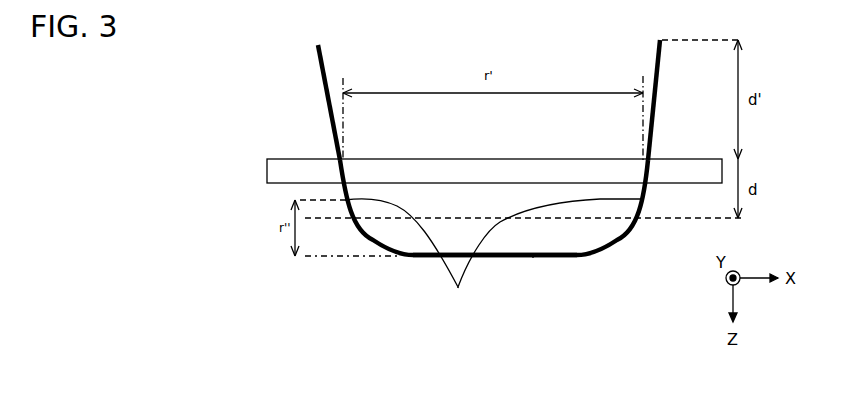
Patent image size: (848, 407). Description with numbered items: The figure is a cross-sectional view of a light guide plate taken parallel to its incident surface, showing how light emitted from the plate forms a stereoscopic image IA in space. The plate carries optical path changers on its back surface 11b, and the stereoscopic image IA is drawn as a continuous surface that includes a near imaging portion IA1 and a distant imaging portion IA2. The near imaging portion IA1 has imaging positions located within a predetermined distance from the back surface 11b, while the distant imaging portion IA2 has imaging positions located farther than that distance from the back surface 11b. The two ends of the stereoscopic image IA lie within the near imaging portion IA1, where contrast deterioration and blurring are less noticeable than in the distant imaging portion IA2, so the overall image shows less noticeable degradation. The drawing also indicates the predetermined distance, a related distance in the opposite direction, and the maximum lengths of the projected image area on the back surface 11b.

The back surface 11b is at (497, 159).
The near imaging portion IA1 is at (455, 301).
The distant imaging portion IA2 is at (533, 258).
The stereoscopic image IA is at (557, 320).